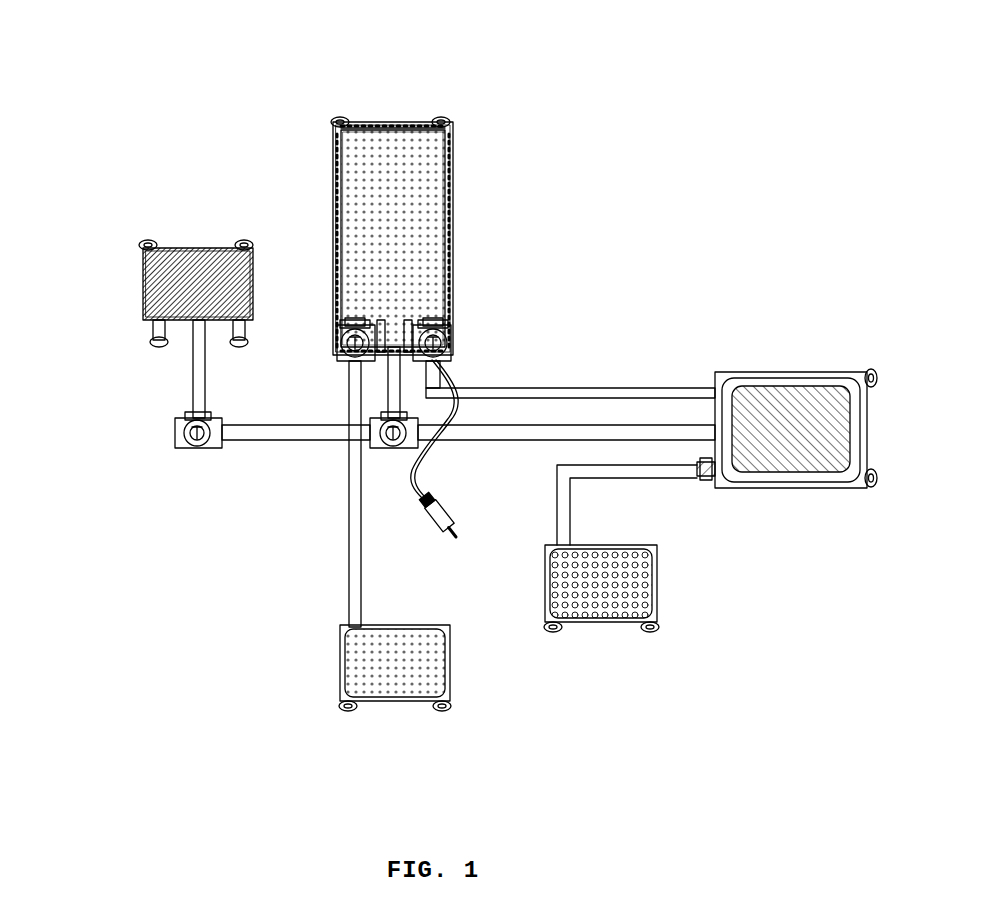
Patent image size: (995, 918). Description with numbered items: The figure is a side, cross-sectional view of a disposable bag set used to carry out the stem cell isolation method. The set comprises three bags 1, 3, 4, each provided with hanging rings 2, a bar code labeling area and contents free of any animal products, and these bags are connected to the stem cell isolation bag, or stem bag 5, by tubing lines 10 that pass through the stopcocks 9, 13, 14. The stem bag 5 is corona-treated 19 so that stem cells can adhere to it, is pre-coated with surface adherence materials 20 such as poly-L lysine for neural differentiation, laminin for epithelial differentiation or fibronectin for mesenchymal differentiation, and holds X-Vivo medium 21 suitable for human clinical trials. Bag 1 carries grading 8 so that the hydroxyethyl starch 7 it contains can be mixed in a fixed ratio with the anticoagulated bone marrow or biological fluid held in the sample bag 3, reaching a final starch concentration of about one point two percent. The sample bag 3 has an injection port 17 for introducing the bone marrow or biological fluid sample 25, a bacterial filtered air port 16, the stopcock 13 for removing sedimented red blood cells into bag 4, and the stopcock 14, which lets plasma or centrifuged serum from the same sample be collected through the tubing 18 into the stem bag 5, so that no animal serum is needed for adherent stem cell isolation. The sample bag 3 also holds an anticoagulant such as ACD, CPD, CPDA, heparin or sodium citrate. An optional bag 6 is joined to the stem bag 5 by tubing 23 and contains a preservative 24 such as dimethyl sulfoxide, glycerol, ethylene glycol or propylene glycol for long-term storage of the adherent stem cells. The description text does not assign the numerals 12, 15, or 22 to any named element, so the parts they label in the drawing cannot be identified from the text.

The bag 1 is at (195, 250).
The hanging rings 2 is at (146, 244).
The sample bag 3 is at (386, 120).
The bag 4 is at (396, 706).
The stem cell isolation bag 5 is at (878, 423).
The optional bag 6 is at (605, 630).
The hydroxyethyl starch 7 is at (143, 285).
The grading 8 is at (148, 320).
The stopcock 9 is at (200, 456).
The tubing lines 10 is at (288, 442).
The tank wall 12 is at (452, 240).
The stopcock 13 is at (345, 362).
The stopcock 14 is at (440, 366).
The connecting pipe with valve 15 is at (495, 441).
The bacterial filtered air port 16 is at (338, 330).
The injection port 17 is at (452, 335).
The tubing 18 is at (570, 388).
The corona treatment 19 is at (794, 376).
The surface adherence materials 20 is at (840, 372).
The X-Vivo medium 21 is at (849, 488).
The drain fitting 22 is at (716, 490).
The tubing 23 is at (666, 480).
The preservative 24 is at (567, 578).
The bone marrow or biological fluid sample 25 is at (430, 444).